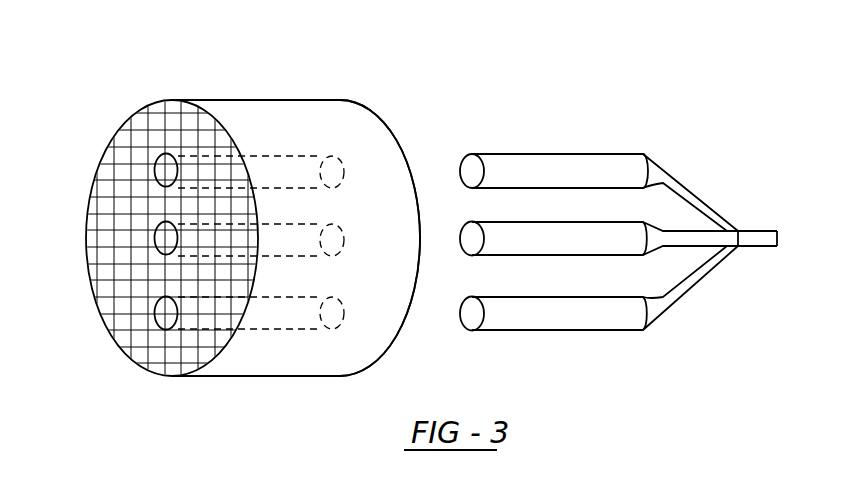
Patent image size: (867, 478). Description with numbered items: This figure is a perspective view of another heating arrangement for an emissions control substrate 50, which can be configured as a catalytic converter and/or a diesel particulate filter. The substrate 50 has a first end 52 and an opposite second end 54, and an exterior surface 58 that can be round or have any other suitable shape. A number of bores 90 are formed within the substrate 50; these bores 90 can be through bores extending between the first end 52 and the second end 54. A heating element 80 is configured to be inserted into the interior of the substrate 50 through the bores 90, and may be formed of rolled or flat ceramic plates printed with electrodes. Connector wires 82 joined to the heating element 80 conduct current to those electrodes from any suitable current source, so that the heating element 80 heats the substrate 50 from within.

The emissions control substrate 50 is at (290, 112).
The first end 52 is at (103, 321).
The second end 54 is at (400, 150).
The exterior surface 58 is at (244, 110).
The heating element 80 is at (570, 238).
The connector wires 82 is at (757, 237).
The bores 90 is at (163, 167).